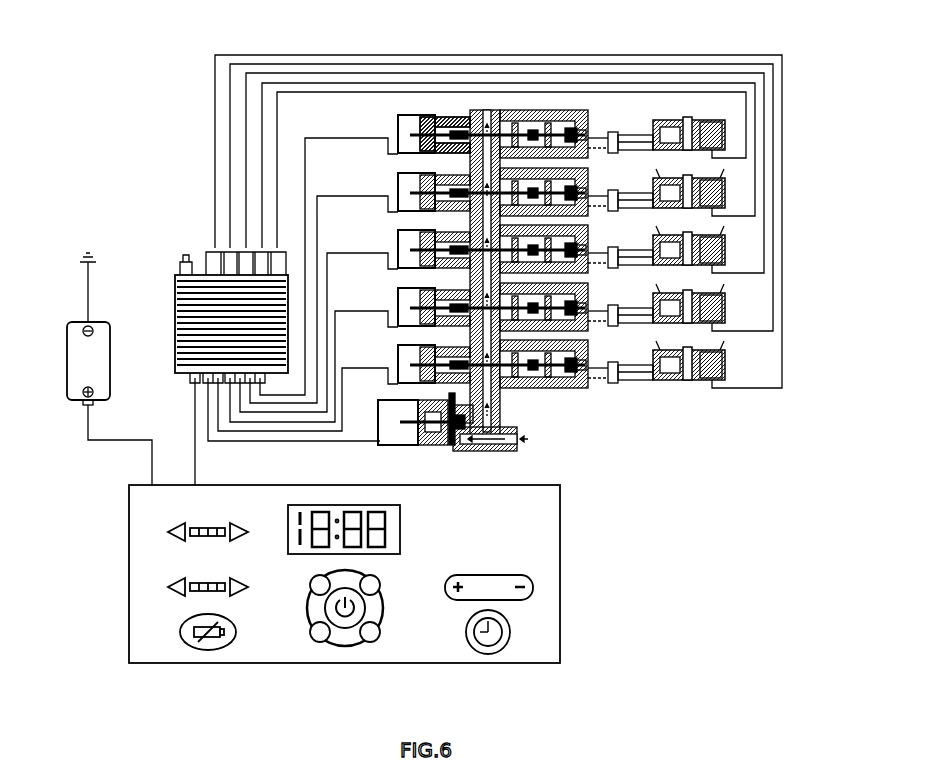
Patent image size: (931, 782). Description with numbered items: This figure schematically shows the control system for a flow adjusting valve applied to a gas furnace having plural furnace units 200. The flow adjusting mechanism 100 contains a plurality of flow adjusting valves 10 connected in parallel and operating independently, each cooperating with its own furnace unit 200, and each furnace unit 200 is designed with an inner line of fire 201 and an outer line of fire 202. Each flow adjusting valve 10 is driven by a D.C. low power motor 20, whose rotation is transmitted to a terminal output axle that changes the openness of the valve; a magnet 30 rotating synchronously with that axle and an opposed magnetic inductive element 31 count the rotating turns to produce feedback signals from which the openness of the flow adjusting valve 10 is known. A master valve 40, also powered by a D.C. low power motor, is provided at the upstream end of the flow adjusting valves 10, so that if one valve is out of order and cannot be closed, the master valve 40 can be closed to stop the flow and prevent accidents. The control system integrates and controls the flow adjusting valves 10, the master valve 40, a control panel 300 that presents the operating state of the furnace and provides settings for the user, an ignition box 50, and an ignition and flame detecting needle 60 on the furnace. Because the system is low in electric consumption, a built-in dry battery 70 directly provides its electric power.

The flow adjusting valve 10 is at (540, 110).
The D.C. low power motor 20 is at (388, 118).
The magnet 30 is at (416, 82).
The magnetic inductive element 31 is at (468, 115).
The master valve 40 is at (438, 448).
The ignition box 50 is at (178, 283).
The ignition and flame detecting needle 60 is at (712, 125).
The dry battery 70 is at (72, 340).
The flow adjusting mechanism 100 is at (490, 248).
The furnace unit 200 is at (715, 240).
The inner line of fire 201 is at (680, 122).
The outer line of fire 202 is at (650, 125).
The control panel 300 is at (560, 575).